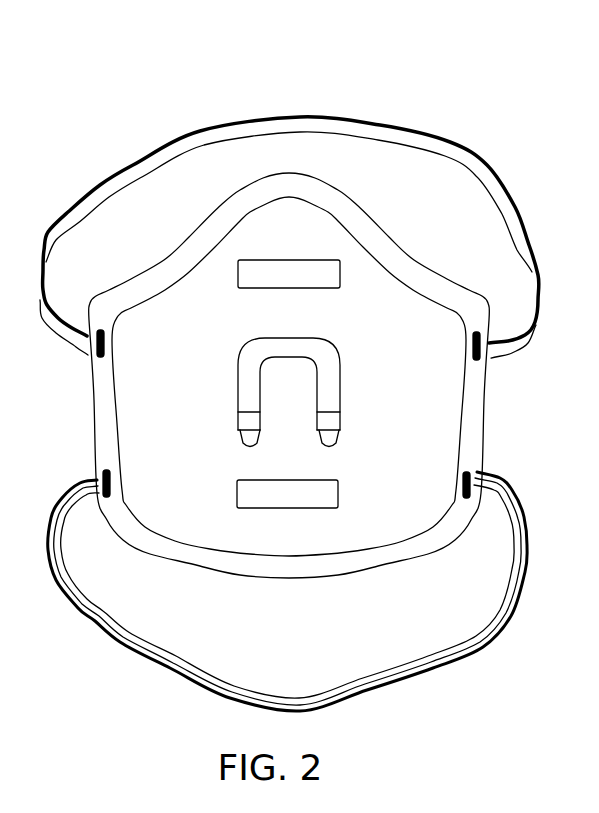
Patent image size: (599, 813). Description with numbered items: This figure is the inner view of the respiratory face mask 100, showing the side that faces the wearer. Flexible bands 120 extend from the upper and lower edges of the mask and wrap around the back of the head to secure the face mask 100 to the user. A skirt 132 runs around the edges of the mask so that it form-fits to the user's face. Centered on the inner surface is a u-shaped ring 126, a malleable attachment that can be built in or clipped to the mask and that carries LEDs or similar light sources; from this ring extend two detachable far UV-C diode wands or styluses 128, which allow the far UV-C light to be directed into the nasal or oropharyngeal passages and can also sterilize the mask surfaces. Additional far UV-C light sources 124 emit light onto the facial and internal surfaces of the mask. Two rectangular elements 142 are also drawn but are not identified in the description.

The respiratory face mask 100 is at (152, 66).
The flexible bands 120 is at (423, 133).
The far UV-C light sources 124 is at (247, 447).
The u-shaped ring 126 is at (242, 352).
The detachable far UV-C wands 128 is at (238, 414).
The skirt 132 is at (465, 430).
The rectangular pads 142 is at (313, 258).